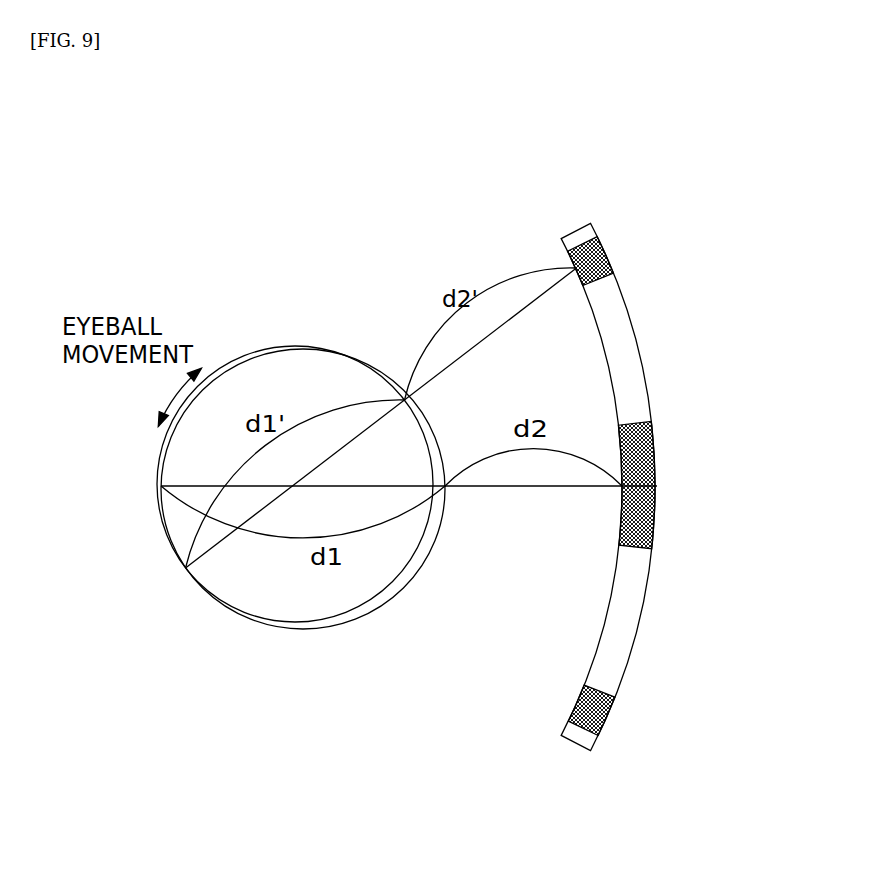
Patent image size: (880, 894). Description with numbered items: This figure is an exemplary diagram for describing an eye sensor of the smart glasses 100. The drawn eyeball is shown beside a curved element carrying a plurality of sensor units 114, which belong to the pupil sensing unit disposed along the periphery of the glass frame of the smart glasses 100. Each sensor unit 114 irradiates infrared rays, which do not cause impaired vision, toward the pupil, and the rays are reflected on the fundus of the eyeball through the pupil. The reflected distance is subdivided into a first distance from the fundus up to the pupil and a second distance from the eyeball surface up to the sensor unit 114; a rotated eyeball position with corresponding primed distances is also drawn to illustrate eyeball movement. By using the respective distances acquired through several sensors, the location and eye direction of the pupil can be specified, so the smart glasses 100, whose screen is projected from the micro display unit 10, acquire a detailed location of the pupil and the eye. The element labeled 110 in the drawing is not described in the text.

The micro display unit 10 is at (443, 493).
The smart glasses 100 is at (560, 212).
The eyeball 110 is at (308, 349).
The sensor unit 114 is at (613, 256).